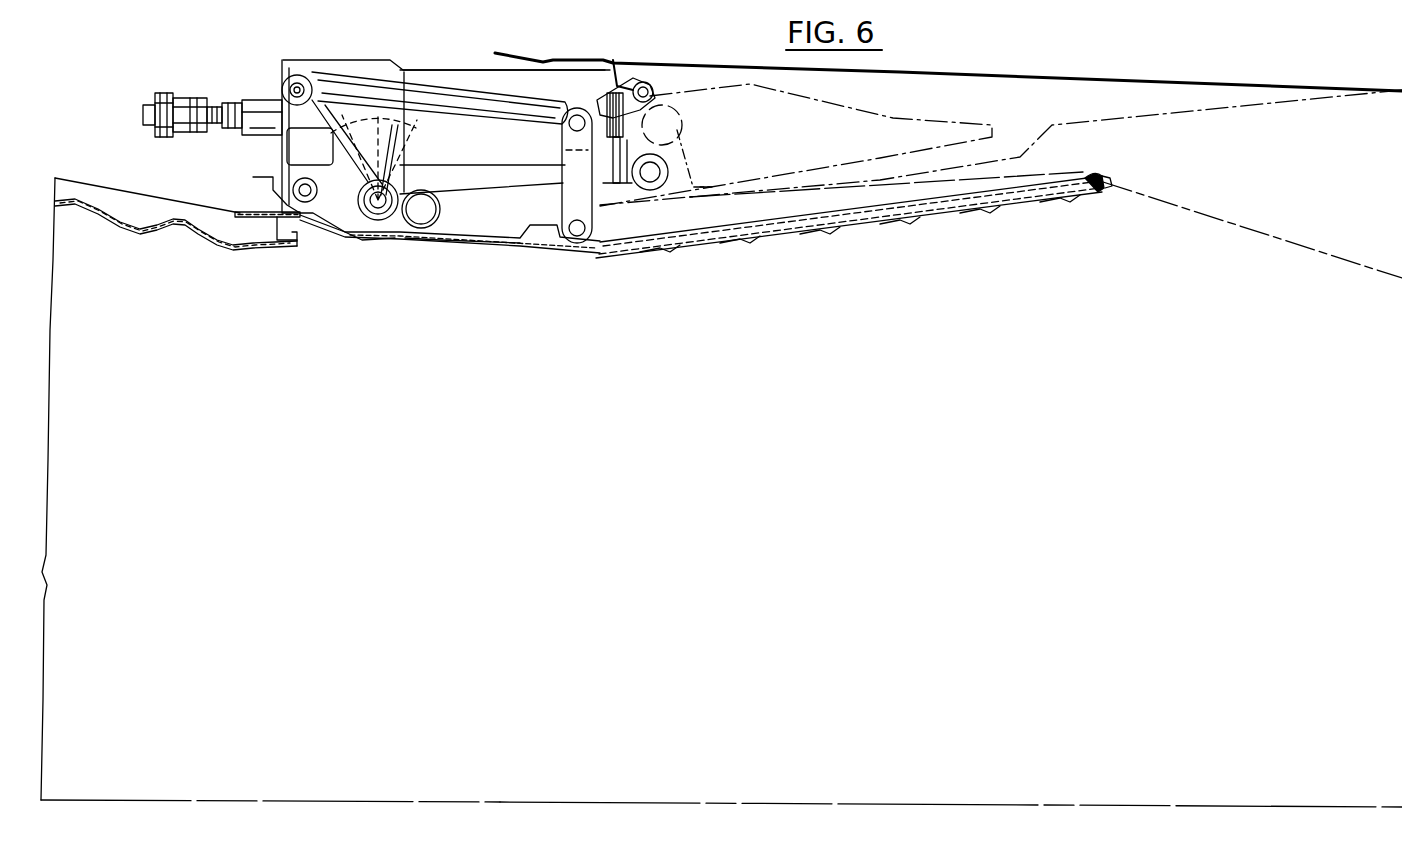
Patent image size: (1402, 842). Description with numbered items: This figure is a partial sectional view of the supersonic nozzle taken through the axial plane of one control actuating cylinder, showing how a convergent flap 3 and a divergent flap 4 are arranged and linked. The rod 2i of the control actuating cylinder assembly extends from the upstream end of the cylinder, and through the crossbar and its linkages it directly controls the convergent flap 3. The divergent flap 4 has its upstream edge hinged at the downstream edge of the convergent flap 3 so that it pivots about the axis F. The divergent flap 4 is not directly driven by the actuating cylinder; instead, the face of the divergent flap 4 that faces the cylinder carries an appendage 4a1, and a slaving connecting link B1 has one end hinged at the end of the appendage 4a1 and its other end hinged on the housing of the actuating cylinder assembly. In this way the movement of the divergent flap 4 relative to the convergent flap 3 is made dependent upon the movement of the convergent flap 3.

The rod 2i is at (258, 105).
The slaving connecting link B1 is at (435, 83).
The appendage 4a1 is at (570, 162).
The axis F is at (581, 236).
The convergent flap 3 is at (467, 252).
The divergent flap 4 is at (837, 227).